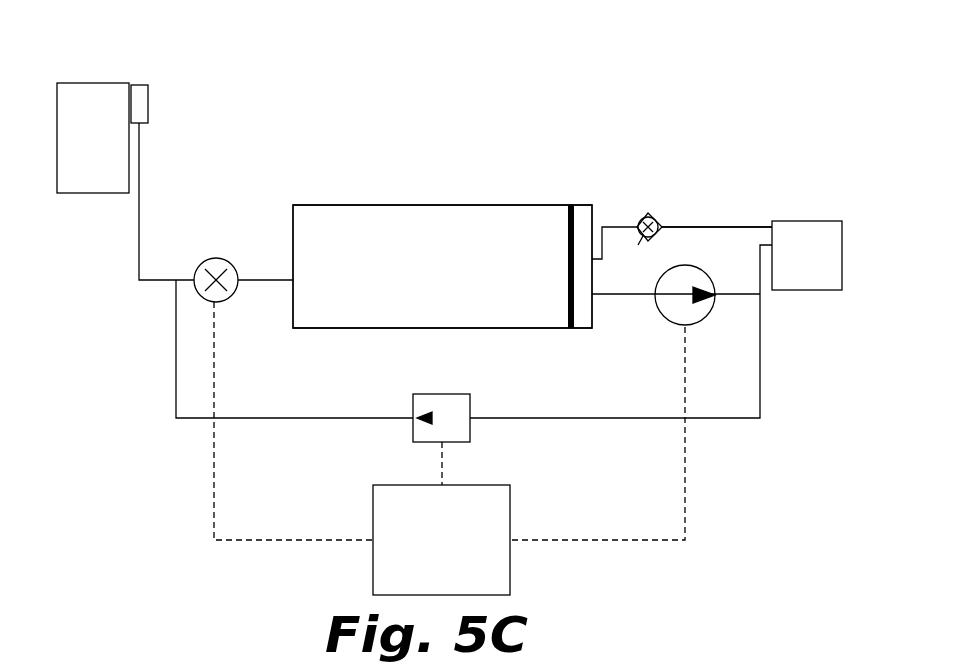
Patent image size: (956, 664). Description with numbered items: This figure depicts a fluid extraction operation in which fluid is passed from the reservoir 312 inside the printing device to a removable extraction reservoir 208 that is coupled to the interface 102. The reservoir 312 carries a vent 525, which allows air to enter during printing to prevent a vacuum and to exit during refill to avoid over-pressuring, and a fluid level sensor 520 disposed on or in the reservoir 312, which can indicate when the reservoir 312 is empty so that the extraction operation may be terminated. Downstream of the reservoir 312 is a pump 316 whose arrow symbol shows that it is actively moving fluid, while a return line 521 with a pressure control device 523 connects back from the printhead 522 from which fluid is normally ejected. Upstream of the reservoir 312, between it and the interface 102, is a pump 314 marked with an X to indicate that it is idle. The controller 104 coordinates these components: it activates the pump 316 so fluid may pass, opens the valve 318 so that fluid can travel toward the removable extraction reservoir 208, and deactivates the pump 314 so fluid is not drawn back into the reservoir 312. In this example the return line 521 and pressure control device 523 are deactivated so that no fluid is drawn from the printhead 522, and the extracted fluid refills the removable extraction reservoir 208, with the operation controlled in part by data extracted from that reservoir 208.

The removable extraction reservoir 208 is at (90, 102).
The interface 102 is at (148, 107).
The pump 314 is at (219, 276).
The vent 525 is at (315, 207).
The reservoir 312 is at (453, 223).
The fluid level sensor 520 is at (584, 207).
The pressure control device 523 is at (645, 210).
The return line 521 is at (697, 226).
The printhead 522 is at (790, 233).
The pump 316 is at (678, 308).
The valve 318 is at (457, 432).
The controller 104 is at (449, 448).